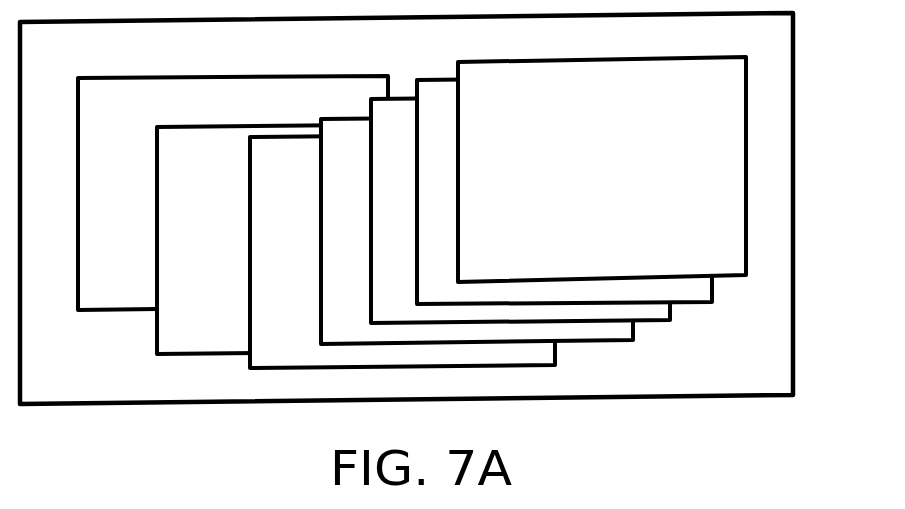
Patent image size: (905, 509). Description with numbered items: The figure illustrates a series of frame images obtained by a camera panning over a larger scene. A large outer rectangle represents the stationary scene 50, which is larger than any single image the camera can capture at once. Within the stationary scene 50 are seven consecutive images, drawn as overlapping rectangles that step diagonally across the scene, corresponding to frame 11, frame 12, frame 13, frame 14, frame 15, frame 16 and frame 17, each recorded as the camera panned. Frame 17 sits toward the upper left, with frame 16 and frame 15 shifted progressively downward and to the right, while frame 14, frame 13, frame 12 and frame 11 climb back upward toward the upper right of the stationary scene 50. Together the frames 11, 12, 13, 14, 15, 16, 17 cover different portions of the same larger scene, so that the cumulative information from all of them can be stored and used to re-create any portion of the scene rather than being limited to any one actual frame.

The stationary scene 50 is at (793, 149).
The frame I1 11 is at (602, 169).
The frame I2 12 is at (564, 190).
The frame I3 13 is at (520, 209).
The frame I4 14 is at (477, 230).
The frame I5 15 is at (402, 251).
The frame I6 16 is at (309, 239).
The frame I7 17 is at (233, 193).